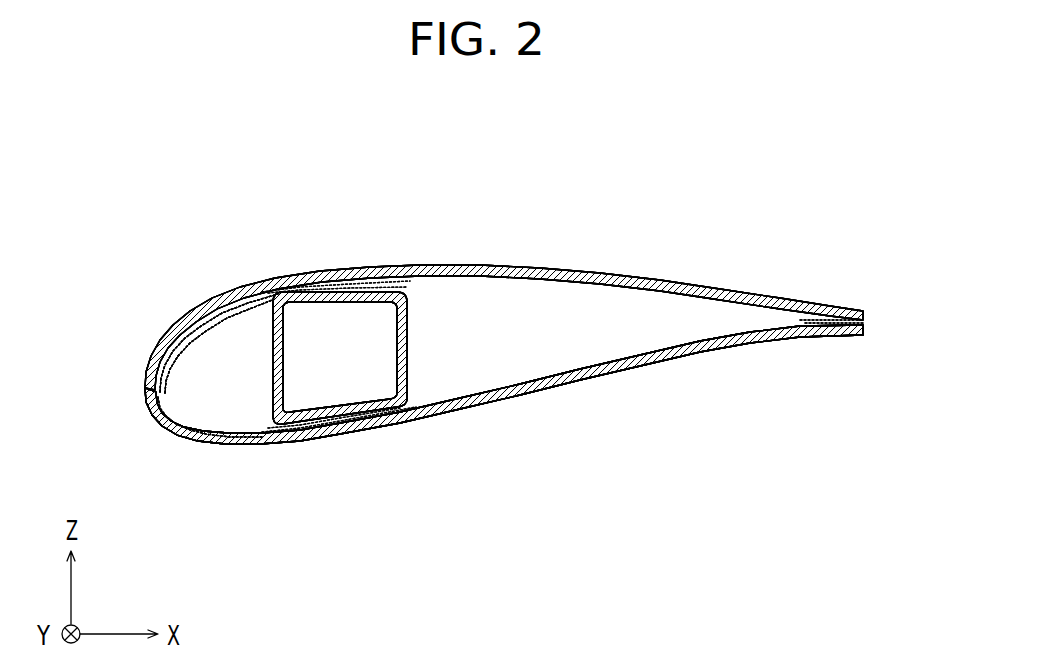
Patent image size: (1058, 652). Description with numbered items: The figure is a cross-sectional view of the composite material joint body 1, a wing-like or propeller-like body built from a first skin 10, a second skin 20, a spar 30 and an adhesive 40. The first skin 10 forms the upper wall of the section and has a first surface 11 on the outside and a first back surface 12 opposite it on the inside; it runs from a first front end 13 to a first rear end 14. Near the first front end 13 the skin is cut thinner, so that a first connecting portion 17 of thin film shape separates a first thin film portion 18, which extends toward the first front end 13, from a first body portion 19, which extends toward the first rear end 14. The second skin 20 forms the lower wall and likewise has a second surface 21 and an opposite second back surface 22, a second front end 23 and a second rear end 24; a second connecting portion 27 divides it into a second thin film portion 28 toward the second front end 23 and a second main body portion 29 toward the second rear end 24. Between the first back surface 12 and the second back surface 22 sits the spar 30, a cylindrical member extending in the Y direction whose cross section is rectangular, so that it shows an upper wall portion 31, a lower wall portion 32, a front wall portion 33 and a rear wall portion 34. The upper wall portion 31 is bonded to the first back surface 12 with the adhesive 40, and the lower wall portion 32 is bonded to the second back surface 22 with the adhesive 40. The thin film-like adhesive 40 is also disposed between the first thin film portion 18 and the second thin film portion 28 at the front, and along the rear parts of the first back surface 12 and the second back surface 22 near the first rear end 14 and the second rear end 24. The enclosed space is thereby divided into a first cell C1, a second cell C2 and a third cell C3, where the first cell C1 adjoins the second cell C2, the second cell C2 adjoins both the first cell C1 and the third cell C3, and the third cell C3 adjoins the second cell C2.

The composite material joint body 1 is at (159, 170).
The first skin 10 is at (685, 186).
The first surface 11 is at (558, 280).
The first back surface 12 is at (589, 272).
The first front end 13 is at (147, 397).
The first rear end 14 is at (864, 310).
The first connecting portion 17 is at (176, 315).
The first thin film portion 18 is at (157, 345).
The first body portion 19 is at (520, 266).
The second skin 20 is at (504, 462).
The second surface 21 is at (552, 385).
The second back surface 22 is at (580, 358).
The second front end 23 is at (200, 402).
The second rear end 24 is at (862, 340).
The second connecting portion 27 is at (158, 420).
The second thin film portion 28 is at (170, 422).
The second main body portion 29 is at (537, 388).
The spar 30 is at (416, 270).
The upper wall portion 31 is at (290, 290).
The lower wall portion 32 is at (306, 432).
The front wall portion 33 is at (240, 288).
The rear wall portion 34 is at (447, 268).
The adhesive 40 is at (150, 365).
The first cell C1 is at (240, 400).
The second cell C2 is at (340, 392).
The third cell C3 is at (505, 367).